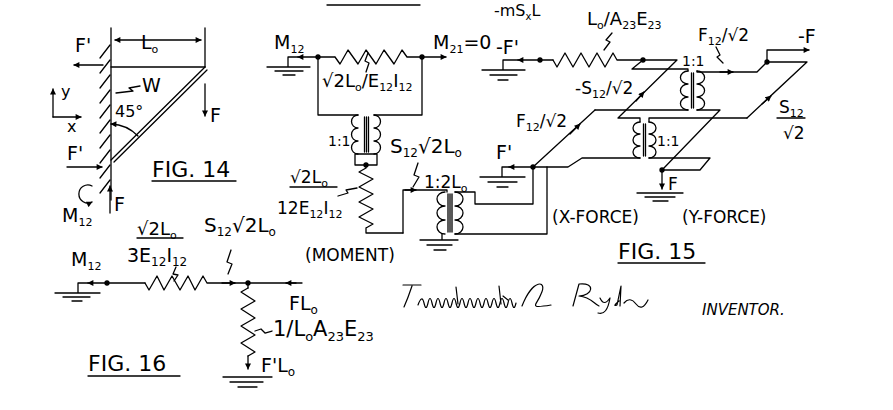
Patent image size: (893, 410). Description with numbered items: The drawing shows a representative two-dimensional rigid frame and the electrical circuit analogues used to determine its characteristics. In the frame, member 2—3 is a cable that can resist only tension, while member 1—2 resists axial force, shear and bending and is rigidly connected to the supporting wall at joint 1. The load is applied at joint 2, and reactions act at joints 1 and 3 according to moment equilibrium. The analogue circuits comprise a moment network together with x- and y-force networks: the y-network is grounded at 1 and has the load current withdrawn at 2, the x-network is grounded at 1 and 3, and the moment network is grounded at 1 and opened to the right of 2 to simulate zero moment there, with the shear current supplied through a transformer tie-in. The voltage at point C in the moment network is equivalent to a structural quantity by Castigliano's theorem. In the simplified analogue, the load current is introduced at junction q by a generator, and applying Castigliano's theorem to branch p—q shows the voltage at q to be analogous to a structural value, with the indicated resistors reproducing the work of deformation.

In FIG. 14, the joint 1 is at (159, 124).
In FIG. 15, the joint 1 is at (490, 109).
In FIG. 14, the joint 2 is at (212, 47).
In FIG. 15, the joint 2 is at (587, 53).
In FIG. 14, the joint 3 is at (158, 56).
In FIG. 15, the joint 3 is at (545, 51).
In FIG. 15, the point c C is at (381, 198).
In FIG. 16, the junction p is at (125, 292).
In FIG. 16, the junction q is at (274, 269).